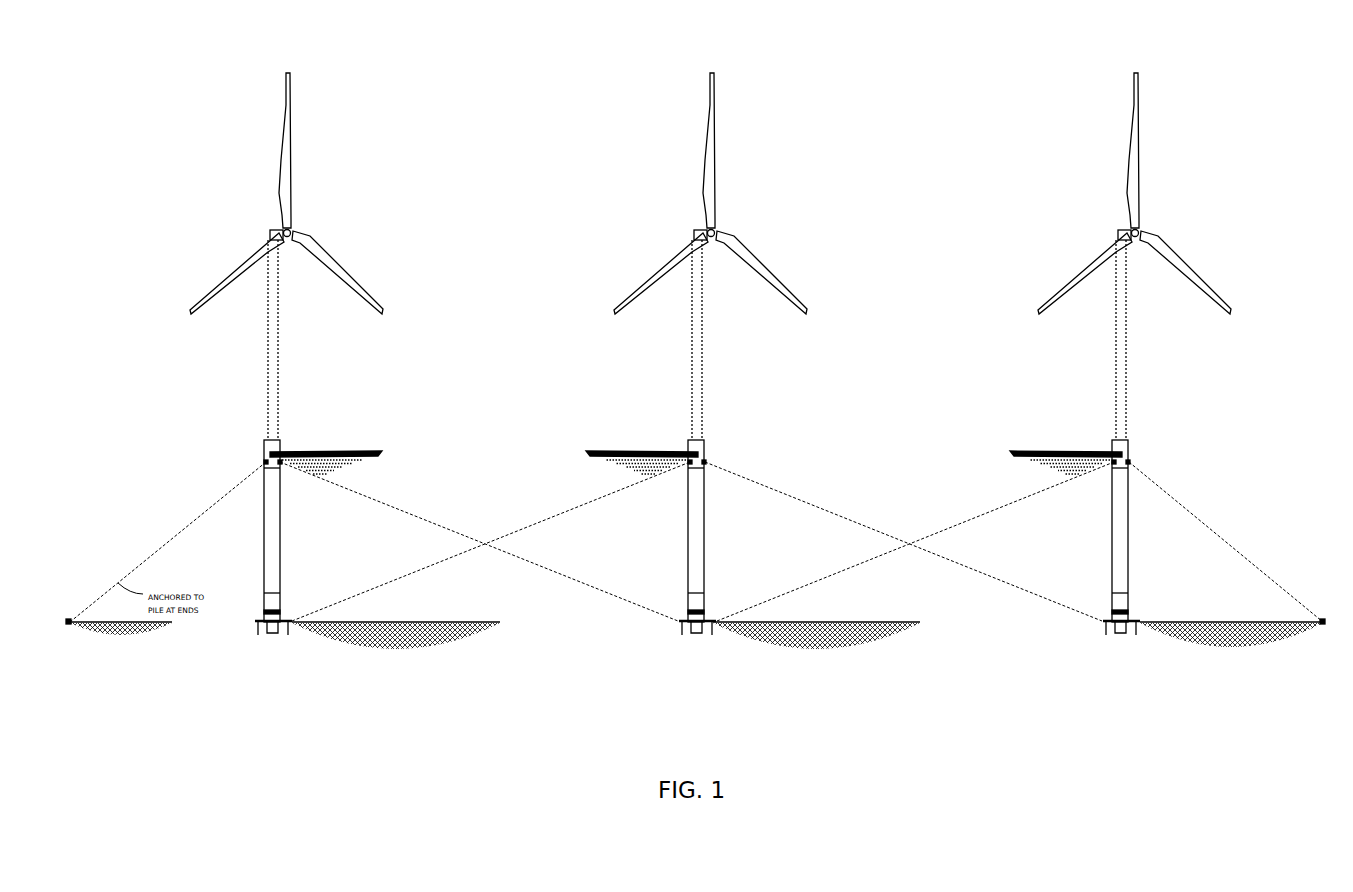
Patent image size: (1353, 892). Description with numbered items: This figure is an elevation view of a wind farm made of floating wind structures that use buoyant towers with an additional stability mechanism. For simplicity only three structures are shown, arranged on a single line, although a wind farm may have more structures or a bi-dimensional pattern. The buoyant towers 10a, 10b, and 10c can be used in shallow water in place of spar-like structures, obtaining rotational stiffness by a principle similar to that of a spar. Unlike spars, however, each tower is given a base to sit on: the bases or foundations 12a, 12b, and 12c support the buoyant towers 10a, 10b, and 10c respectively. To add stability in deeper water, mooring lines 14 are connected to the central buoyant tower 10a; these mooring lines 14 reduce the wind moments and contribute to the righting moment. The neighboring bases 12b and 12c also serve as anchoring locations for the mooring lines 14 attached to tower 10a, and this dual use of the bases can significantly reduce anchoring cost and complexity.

The buoyant tower 10a is at (710, 347).
The buoyant tower 10b is at (285, 317).
The buoyant tower 10c is at (1134, 347).
The base or foundation 12a is at (673, 676).
The base or foundation 12b is at (273, 655).
The base or foundation 12c is at (1094, 674).
The mooring lines 14 is at (590, 500).